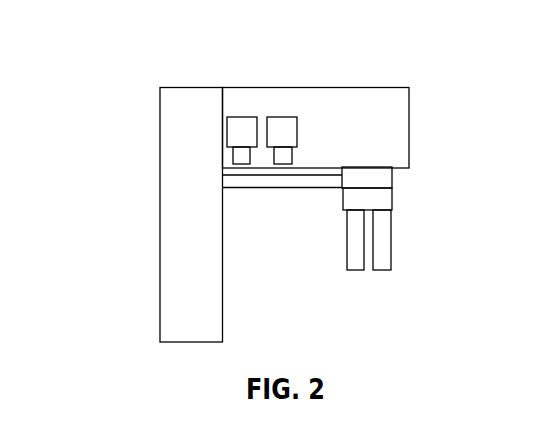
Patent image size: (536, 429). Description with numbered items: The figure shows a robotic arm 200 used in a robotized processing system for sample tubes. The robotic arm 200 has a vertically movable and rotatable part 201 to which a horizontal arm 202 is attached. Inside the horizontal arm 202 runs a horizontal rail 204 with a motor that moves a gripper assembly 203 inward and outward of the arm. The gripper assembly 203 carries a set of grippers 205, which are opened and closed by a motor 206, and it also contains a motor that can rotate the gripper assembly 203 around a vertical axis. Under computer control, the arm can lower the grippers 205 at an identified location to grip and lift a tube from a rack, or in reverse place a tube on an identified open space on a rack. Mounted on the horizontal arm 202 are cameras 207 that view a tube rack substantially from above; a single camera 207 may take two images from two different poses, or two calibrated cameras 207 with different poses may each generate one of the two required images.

The robotic arm 200 is at (292, 177).
The vertically movable and rotatable part 201 is at (164, 215).
The horizontal arm 202 is at (316, 128).
The gripper assembly 203 is at (399, 180).
The horizontal rail 204 is at (283, 199).
The grippers 205 is at (367, 257).
The motor 206 is at (383, 201).
The camera 207 is at (287, 117).